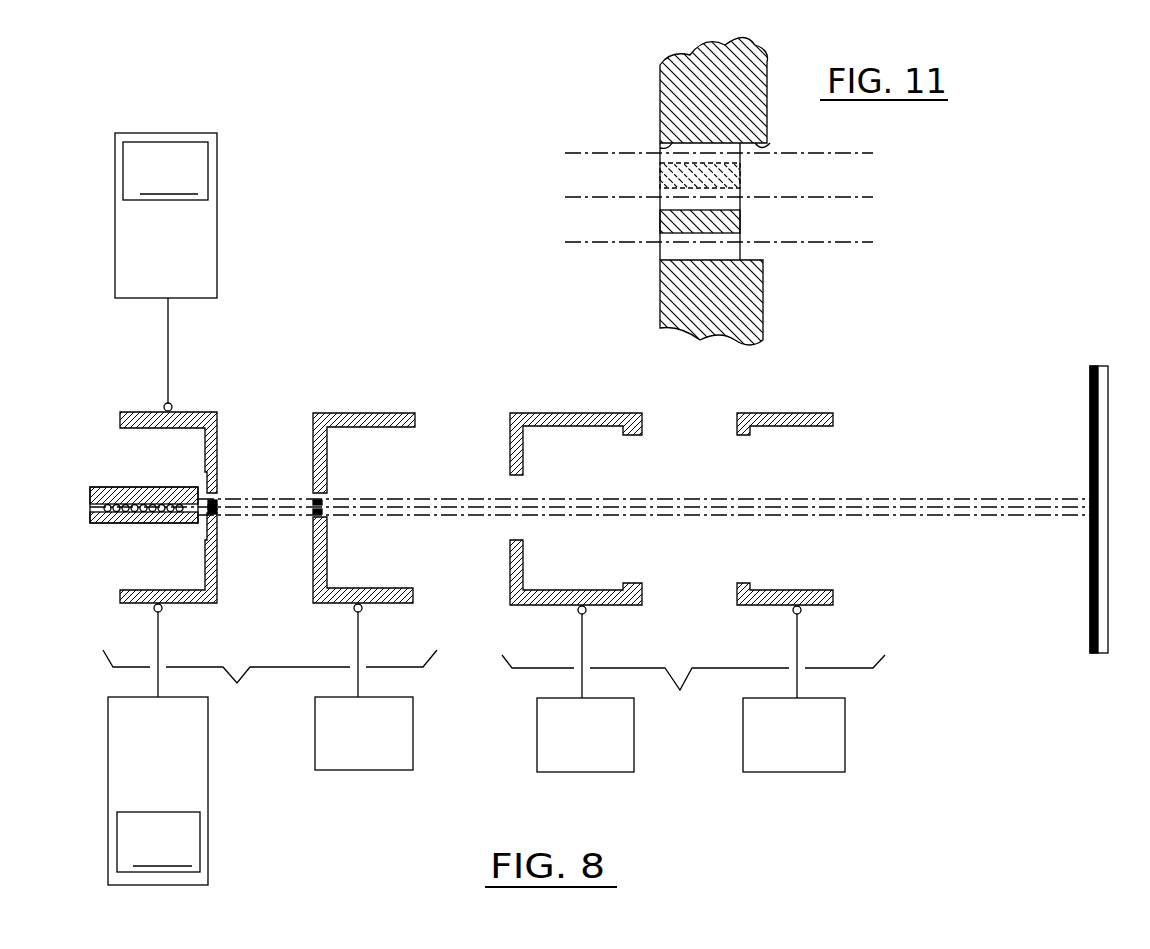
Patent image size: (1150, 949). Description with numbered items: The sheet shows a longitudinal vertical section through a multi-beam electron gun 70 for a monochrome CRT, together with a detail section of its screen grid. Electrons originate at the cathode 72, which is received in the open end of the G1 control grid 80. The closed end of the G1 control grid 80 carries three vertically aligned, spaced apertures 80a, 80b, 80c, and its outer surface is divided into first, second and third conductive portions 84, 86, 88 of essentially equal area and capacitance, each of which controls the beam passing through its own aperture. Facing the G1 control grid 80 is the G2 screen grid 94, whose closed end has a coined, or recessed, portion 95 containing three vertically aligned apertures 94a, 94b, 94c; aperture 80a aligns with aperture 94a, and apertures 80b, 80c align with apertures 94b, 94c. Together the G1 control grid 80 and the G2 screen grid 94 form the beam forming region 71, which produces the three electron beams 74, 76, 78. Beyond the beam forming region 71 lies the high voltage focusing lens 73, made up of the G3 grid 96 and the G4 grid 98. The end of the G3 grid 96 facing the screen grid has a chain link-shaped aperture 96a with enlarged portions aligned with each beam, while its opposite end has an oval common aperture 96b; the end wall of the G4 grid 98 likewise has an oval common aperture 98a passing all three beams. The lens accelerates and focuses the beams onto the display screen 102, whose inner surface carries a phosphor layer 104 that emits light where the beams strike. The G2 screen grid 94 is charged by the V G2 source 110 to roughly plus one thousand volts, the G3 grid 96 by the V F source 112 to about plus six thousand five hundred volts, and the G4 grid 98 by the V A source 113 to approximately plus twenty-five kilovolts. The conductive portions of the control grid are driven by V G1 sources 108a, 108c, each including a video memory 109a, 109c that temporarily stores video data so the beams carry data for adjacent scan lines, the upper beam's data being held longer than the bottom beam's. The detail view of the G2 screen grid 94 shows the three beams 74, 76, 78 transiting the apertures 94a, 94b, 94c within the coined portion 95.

In FIG. 8, the multi-beam electron gun 70 is at (341, 368).
In FIG. 8, the beam forming region 71 is at (270, 681).
In FIG. 8, the cathode 72 is at (125, 487).
In FIG. 8, the high voltage focusing lens 73 is at (693, 686).
In FIG. 8, the upper electron beam 74 is at (868, 500).
In FIG. 11, the upper electron beam 74 is at (858, 155).
In FIG. 8, the intermediate electron beam 76 is at (948, 507).
In FIG. 11, the intermediate electron beam 76 is at (865, 196).
In FIG. 8, the bottom electron beam 78 is at (977, 516).
In FIG. 11, the bottom electron beam 78 is at (865, 242).
In FIG. 8, the G1 control grid 80 is at (150, 412).
In FIG. 8, the first aperture of G1 control grid 80a is at (215, 500).
In FIG. 8, the second aperture of G1 control grid 80b is at (215, 515).
In FIG. 8, the third aperture of G1 control grid 80c is at (216, 518).
In FIG. 8, the first conductive portion 84 is at (218, 432).
In FIG. 8, the second conductive portion 86 is at (215, 508).
In FIG. 8, the third conductive portion 88 is at (218, 604).
In FIG. 8, the G2 screen grid 94 is at (363, 413).
In FIG. 11, the G2 screen grid 94 is at (652, 93).
In FIG. 8, the first aperture of G2 screen grid 94a is at (310, 497).
In FIG. 11, the first aperture of G2 screen grid 94a is at (662, 147).
In FIG. 8, the second aperture of G2 screen grid 94b is at (317, 520).
In FIG. 11, the second aperture of G2 screen grid 94b is at (662, 186).
In FIG. 8, the third aperture of G2 screen grid 94c is at (318, 522).
In FIG. 11, the third aperture of G2 screen grid 94c is at (663, 248).
In FIG. 8, the coined portion 95 is at (320, 497).
In FIG. 11, the coined portion 95 is at (770, 147).
In FIG. 8, the G3 grid 96 is at (568, 413).
In FIG. 8, the chain link-shaped aperture 96a is at (510, 478).
In FIG. 8, the oval common aperture of G3 grid 96b is at (630, 435).
In FIG. 8, the G4 grid 98 is at (798, 413).
In FIG. 8, the oval common aperture of G4 grid 98a is at (740, 588).
In FIG. 8, the display screen 102 is at (1105, 366).
In FIG. 8, the phosphor layer 104 is at (1090, 390).
In FIG. 8, the V G1 source 108a is at (190, 220).
In FIG. 8, the V G1 source 108c is at (190, 797).
In FIG. 8, the video memory 109a is at (165, 171).
In FIG. 8, the video memory 109c is at (158, 842).
In FIG. 8, the V G2 source 110 is at (358, 771).
In FIG. 8, the V F source 112 is at (588, 772).
In FIG. 8, the V A source 113 is at (793, 772).